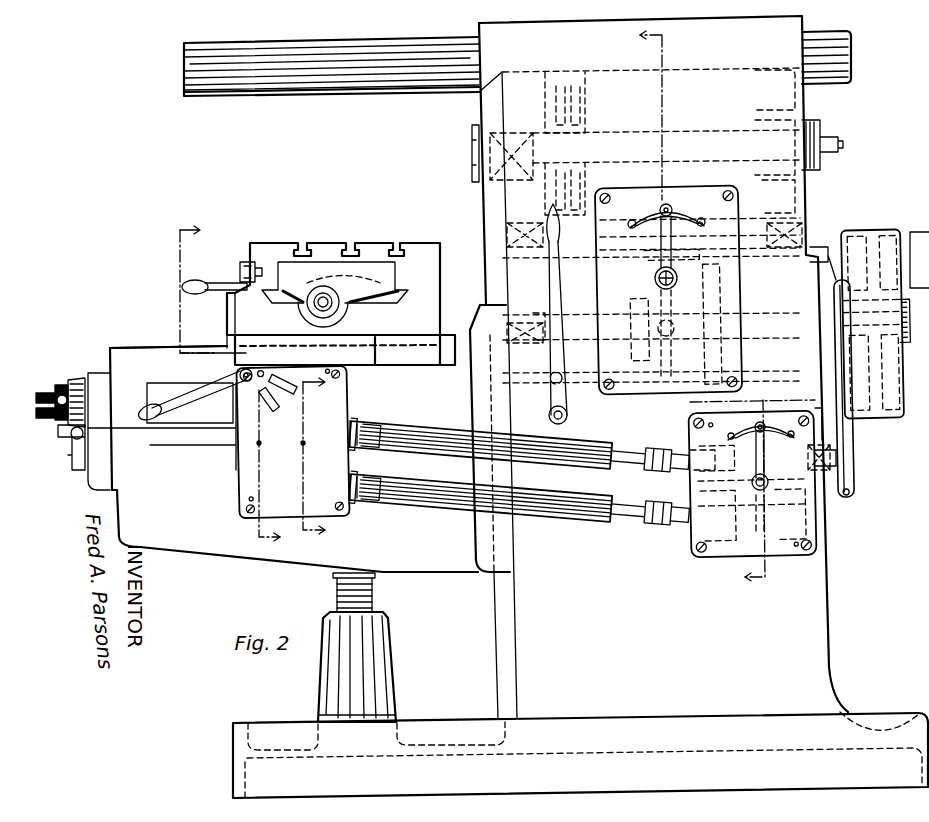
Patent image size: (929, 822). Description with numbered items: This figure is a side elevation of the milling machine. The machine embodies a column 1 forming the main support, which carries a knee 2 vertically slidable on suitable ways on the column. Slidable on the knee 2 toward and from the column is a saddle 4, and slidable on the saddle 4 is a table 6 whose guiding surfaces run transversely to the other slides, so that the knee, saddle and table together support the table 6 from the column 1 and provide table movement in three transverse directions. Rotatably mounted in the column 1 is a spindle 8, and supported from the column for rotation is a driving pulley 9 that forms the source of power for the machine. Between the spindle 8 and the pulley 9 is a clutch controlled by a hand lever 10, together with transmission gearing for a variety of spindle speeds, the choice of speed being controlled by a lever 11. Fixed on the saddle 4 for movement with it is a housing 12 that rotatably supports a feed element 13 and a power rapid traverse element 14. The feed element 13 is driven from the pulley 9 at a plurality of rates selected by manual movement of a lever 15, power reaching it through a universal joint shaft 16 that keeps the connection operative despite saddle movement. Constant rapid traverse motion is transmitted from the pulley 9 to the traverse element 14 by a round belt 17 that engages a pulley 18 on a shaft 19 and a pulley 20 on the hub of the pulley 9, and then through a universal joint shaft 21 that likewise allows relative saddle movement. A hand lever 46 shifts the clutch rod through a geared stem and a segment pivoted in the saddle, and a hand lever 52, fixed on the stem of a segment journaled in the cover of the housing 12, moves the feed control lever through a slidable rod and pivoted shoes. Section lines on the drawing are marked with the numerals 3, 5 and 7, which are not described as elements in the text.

The column 1 is at (823, 615).
The knee 2 is at (183, 549).
The section line 3- 3 is at (727, 306).
The saddle 4 is at (440, 322).
The knee top slide 5 is at (163, 348).
The table 6 is at (334, 243).
The table clamp 7 is at (410, 297).
The spindle 8 is at (473, 172).
The driving pulley 9 is at (884, 224).
The hand lever 10 is at (548, 280).
The lever 11 is at (657, 265).
The housing 12 is at (238, 494).
The feed element 13 is at (355, 490).
The power rapid traverse element 14 is at (355, 442).
The lever 15 is at (770, 462).
The universal joint shaft 16 is at (607, 518).
The round belt 17 is at (829, 423).
The pulley 18 is at (853, 478).
The shaft 19 is at (838, 458).
The pulley 20 is at (832, 258).
The universal joint shaft 21 is at (600, 466).
The hand lever 46 is at (202, 286).
The hand lever 52 is at (148, 409).